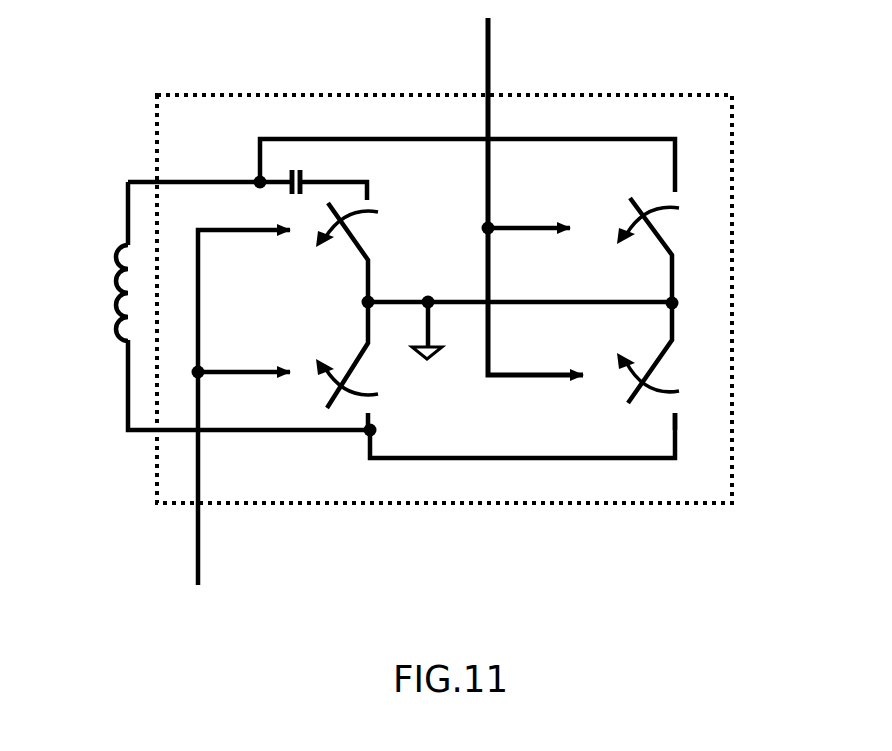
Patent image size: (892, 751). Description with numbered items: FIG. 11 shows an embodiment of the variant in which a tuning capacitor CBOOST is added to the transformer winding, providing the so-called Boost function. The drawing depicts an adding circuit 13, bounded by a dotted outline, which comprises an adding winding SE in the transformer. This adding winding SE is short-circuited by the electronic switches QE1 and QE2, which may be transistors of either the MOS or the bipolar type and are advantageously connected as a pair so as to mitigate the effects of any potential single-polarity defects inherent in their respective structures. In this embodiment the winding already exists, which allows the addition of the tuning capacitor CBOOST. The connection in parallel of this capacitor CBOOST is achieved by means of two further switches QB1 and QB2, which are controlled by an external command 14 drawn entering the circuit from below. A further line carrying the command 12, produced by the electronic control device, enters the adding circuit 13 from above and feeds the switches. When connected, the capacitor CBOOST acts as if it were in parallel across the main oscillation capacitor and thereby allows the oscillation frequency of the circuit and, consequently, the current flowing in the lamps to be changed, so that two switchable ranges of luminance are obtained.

The command 12 is at (485, 57).
The adding circuit 13 is at (545, 572).
The external command 14 is at (207, 551).
The adding winding SE is at (103, 293).
The tuning capacitor CBOOST is at (292, 160).
The switch QB1 is at (365, 232).
The switch QB2 is at (362, 385).
The electronic switch QE1 is at (680, 220).
The electronic switch QE2 is at (675, 373).